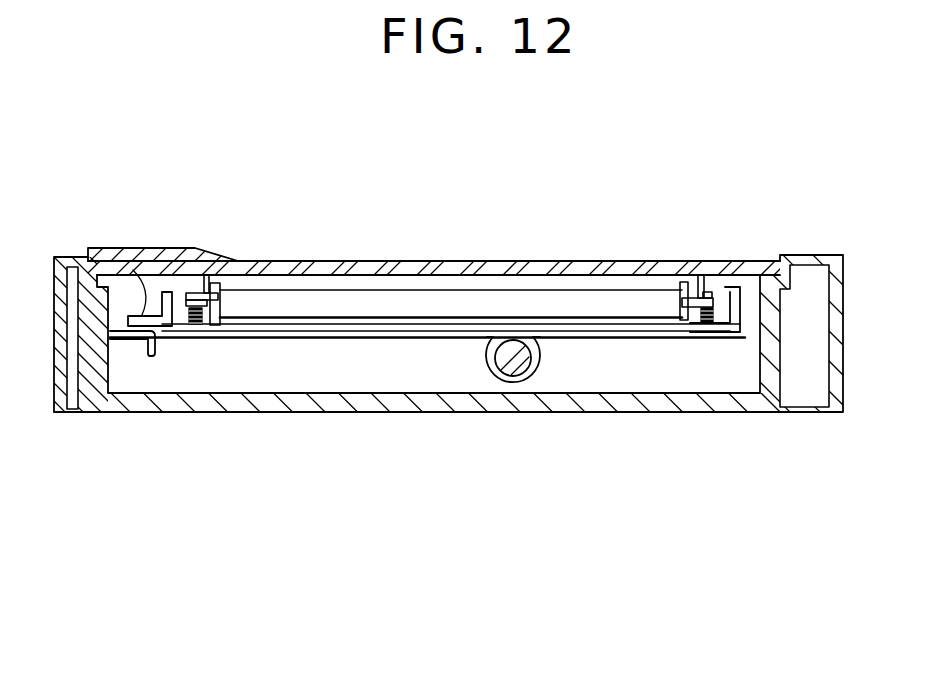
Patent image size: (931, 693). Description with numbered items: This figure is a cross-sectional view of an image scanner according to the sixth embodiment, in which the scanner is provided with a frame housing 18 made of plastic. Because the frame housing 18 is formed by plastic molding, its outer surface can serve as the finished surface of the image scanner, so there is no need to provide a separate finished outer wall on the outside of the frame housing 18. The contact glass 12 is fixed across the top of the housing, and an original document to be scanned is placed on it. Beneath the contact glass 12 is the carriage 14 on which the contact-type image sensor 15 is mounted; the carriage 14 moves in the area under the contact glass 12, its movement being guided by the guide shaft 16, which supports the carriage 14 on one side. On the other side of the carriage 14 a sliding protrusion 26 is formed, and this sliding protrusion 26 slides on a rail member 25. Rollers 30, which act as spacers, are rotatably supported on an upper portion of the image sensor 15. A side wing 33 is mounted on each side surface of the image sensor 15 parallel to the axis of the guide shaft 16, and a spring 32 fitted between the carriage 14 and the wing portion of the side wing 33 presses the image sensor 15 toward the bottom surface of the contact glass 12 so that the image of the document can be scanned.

The contact glass 12 is at (324, 262).
The carriage 14 is at (357, 338).
The contact-type image sensor 15 is at (553, 293).
The guide shaft 16 is at (517, 366).
The frame housing 18 is at (735, 412).
The rail member 25 is at (122, 340).
The sliding protrusion 26 is at (133, 267).
The rollers 30 is at (207, 277).
The spring 32 is at (720, 313).
The side wing 33 is at (205, 338).